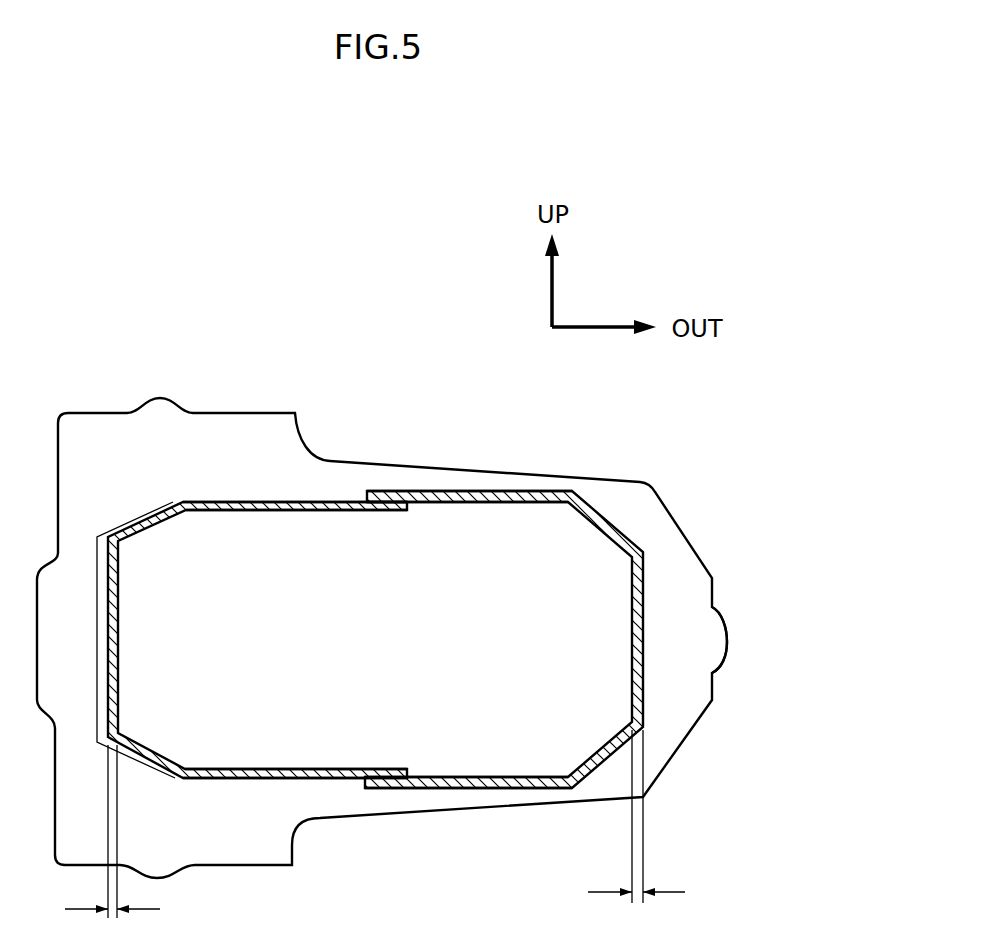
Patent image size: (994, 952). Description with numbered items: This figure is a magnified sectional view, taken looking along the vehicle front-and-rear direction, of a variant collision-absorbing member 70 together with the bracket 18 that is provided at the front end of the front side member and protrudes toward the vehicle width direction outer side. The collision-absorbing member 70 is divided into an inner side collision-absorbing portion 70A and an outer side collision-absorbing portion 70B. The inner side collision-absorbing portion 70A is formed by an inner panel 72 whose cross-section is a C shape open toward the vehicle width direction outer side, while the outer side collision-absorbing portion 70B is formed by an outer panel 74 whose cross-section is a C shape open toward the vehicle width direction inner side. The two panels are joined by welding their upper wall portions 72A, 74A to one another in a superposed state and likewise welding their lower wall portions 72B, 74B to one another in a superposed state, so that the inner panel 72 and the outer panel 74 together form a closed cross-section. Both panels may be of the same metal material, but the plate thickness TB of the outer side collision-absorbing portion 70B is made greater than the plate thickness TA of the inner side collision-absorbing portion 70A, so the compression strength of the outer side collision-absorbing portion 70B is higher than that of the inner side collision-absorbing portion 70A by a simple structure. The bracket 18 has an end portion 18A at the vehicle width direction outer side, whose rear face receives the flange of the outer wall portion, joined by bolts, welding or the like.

The bracket 18 is at (245, 414).
The end portion of the bracket 18A is at (695, 644).
The collision-absorbing member 70 is at (317, 393).
The inner side collision-absorbing portion 70A is at (257, 587).
The outer side collision-absorbing portion 70B is at (504, 592).
The inner panel 72 is at (118, 639).
The upper wall portion of the inner panel 72A is at (263, 512).
The lower wall portion of the inner panel 72B is at (255, 767).
The outer panel 74 is at (632, 628).
The upper wall portion of the outer panel 74A is at (490, 503).
The lower wall portion of the outer panel 74B is at (483, 776).
The plate thickness of the inner side collision-absorbing portion TA is at (112, 848).
The plate thickness of the outer side collision-absorbing portion TB is at (636, 831).